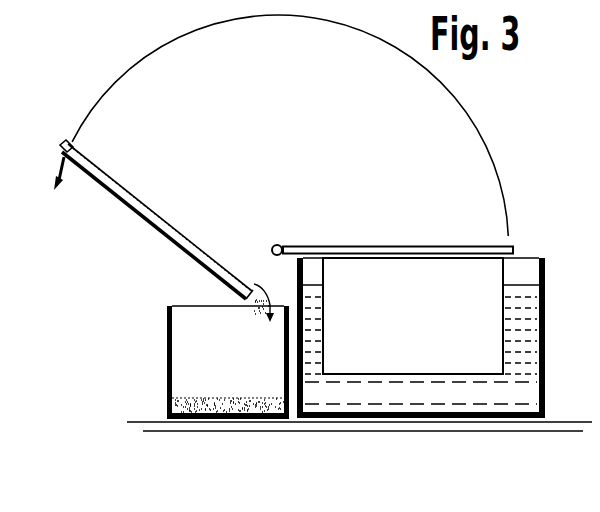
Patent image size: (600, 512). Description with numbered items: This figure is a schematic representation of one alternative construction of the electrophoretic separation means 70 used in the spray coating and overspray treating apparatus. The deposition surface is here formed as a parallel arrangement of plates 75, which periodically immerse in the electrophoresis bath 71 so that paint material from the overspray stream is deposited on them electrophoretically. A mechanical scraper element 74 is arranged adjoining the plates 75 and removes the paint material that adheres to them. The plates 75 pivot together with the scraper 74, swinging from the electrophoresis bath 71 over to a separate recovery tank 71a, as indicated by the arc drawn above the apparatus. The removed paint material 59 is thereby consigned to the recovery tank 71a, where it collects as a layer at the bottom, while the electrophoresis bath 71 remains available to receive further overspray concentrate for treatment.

The removed paint material 59 is at (173, 406).
The electrophoretic separation means 70 is at (306, 239).
The electrophoresis bath 71 is at (545, 370).
The recovery tank 71a is at (168, 344).
The mechanical scraper element 74 is at (157, 228).
The plates 75 is at (407, 355).